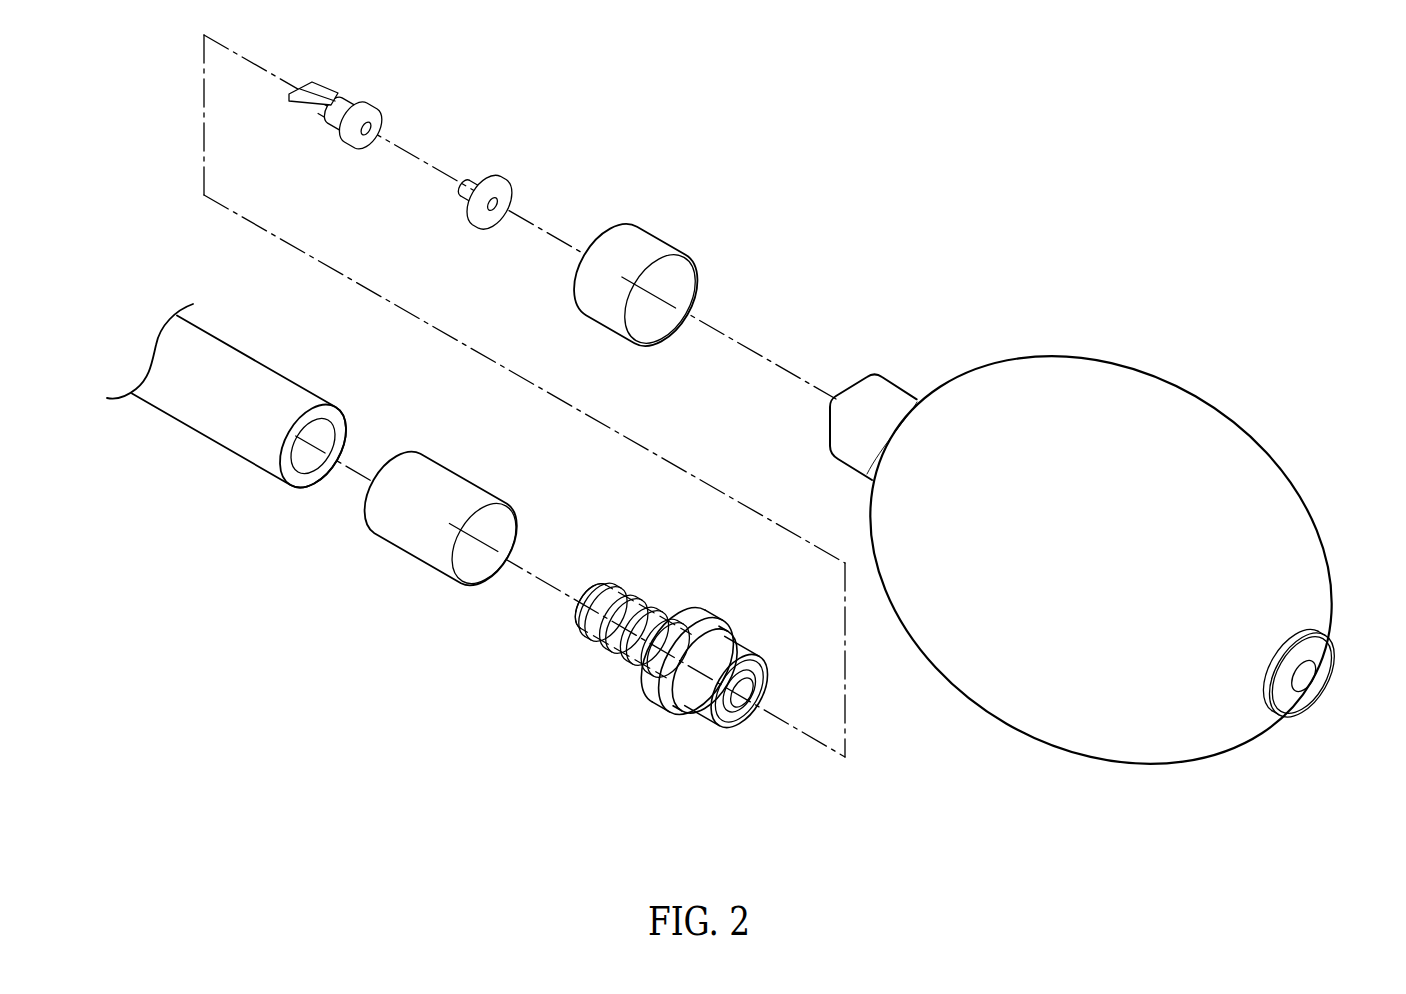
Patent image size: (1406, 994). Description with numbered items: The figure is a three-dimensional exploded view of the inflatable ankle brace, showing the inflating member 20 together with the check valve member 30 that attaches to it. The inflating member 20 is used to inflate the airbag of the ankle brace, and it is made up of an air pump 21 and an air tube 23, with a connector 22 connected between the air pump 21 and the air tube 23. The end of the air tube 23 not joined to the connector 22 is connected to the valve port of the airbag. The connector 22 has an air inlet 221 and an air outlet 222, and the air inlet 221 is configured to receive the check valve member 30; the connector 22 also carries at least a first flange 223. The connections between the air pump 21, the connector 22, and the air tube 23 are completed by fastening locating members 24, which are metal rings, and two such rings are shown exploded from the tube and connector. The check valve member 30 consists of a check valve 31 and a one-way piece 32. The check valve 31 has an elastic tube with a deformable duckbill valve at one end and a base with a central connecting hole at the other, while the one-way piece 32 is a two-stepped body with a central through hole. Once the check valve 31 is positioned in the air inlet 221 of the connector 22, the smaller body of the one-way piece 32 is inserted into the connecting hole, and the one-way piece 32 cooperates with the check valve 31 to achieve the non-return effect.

The inflating member 20 is at (1101, 560).
The air pump 21 is at (1200, 743).
The connector 22 is at (648, 637).
The air inlet 221 is at (740, 710).
The air outlet 222 is at (568, 612).
The first flange 223 is at (621, 590).
The air tube 23 is at (222, 427).
The locating member 24 is at (443, 493).
The check valve member 30 is at (411, 135).
The check valve 31 is at (338, 90).
The one-way piece 32 is at (492, 177).